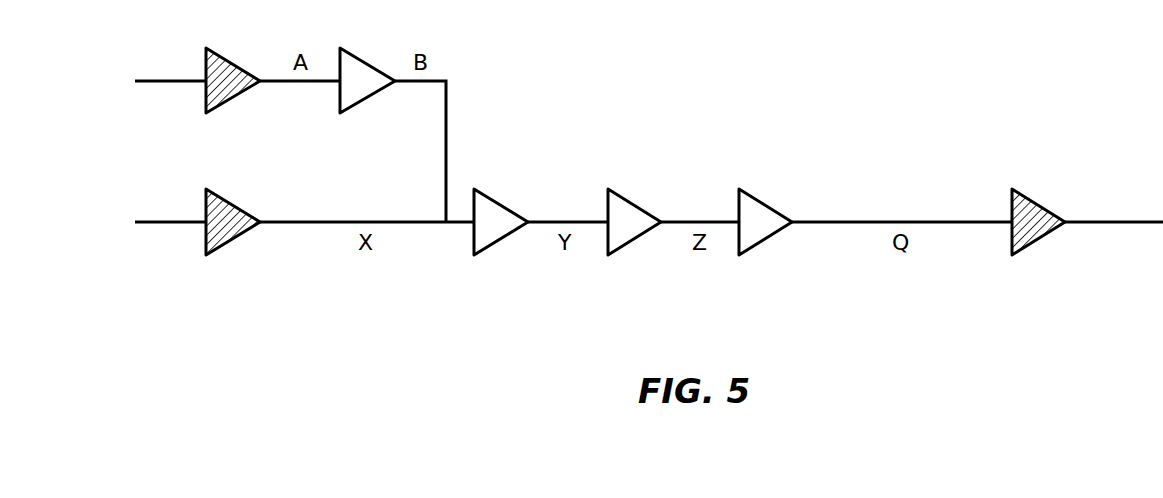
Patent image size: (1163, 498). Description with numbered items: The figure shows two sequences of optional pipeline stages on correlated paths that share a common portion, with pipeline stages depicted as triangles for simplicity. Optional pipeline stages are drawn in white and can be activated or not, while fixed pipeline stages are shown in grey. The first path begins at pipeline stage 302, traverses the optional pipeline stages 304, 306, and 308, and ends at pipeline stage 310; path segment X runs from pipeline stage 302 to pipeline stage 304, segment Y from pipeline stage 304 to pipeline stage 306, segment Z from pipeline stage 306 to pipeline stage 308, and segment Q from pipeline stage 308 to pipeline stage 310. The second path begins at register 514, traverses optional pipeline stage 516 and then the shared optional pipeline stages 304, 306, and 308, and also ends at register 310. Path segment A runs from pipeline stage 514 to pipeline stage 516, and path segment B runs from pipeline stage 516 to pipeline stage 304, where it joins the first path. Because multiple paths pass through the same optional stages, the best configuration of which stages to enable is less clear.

The pipeline stage 302 is at (222, 195).
The optional pipeline stage 304 is at (488, 195).
The optional pipeline stage 306 is at (623, 195).
The optional pipeline stage 308 is at (752, 195).
The pipeline stage 310 is at (1025, 195).
The register 514 is at (233, 98).
The optional pipeline stage 516 is at (363, 100).